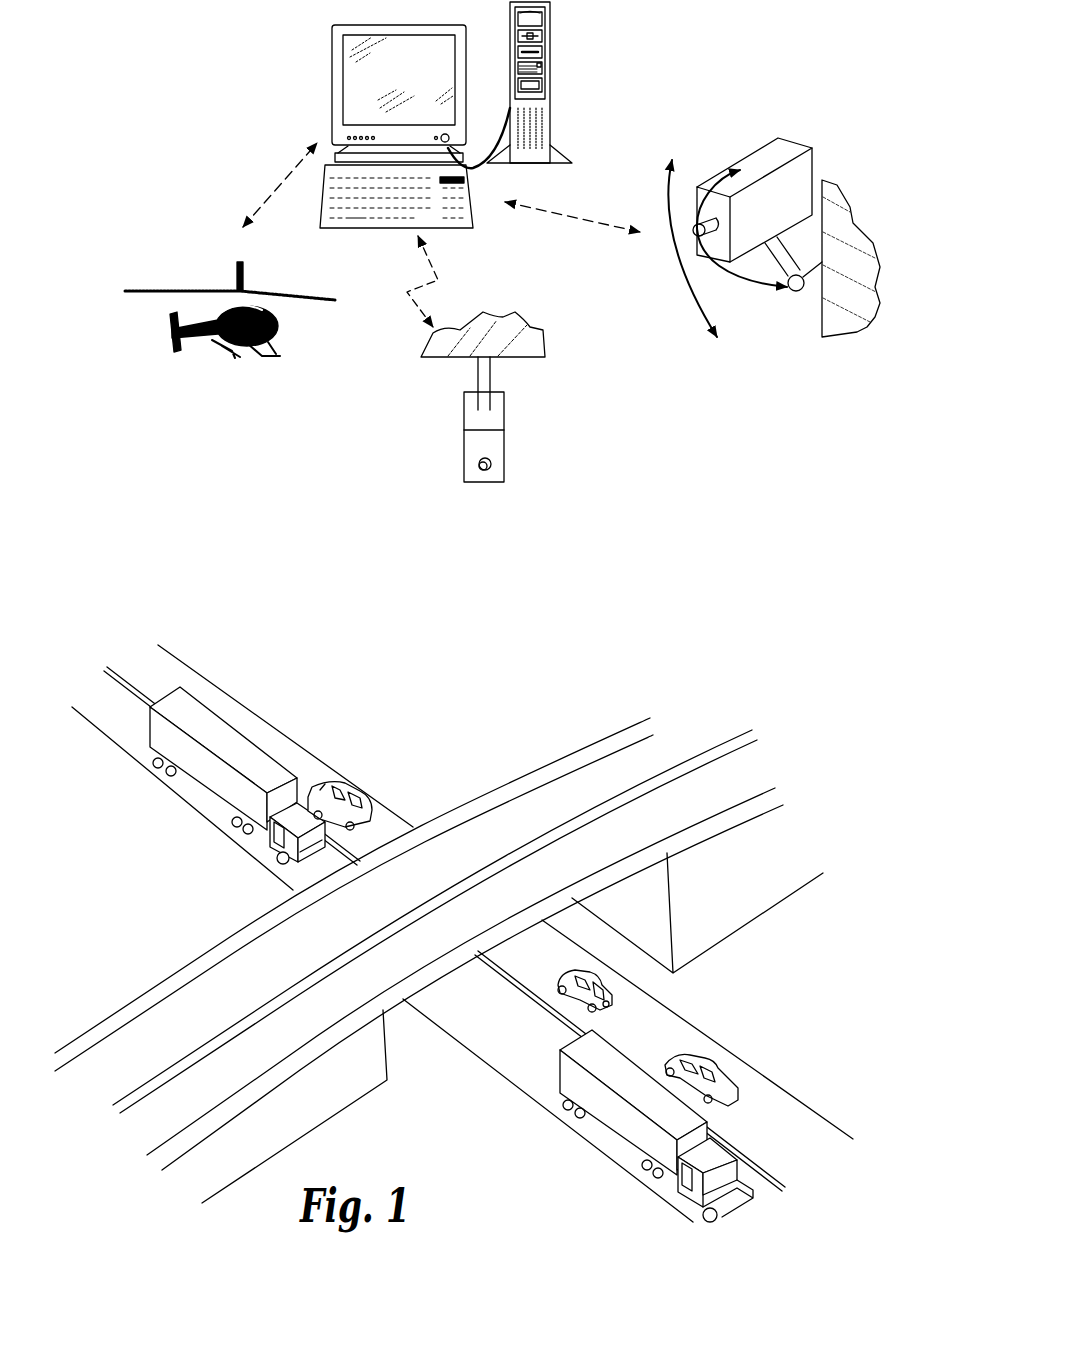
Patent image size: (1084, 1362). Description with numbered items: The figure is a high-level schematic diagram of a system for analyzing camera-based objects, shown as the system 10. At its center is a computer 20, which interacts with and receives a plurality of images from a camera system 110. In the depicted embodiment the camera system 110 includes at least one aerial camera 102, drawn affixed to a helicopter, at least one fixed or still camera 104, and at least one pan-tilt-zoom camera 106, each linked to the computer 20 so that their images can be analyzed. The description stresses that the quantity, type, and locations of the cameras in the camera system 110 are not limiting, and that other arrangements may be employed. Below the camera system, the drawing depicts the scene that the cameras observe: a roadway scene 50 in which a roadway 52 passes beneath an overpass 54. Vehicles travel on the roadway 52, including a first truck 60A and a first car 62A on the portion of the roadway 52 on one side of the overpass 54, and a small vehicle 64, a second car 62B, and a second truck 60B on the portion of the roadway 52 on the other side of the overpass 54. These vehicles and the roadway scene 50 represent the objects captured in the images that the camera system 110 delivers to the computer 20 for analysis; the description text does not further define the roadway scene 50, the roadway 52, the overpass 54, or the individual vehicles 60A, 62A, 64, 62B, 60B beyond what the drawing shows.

The system 10 is at (243, 78).
The computer 20 is at (562, 107).
The camera system 110 is at (145, 258).
The aerial camera 102 is at (268, 355).
The fixed camera 104 is at (504, 420).
The pan-tilt-zoom camera 106 is at (783, 138).
The roadway scene 50 is at (360, 656).
The roadway 52 is at (750, 685).
The overpass 54 is at (455, 1070).
The truck 60A is at (152, 697).
The car 62A is at (357, 797).
The vehicle 64 is at (613, 993).
The car 62B is at (711, 1057).
The truck 60B is at (612, 1108).